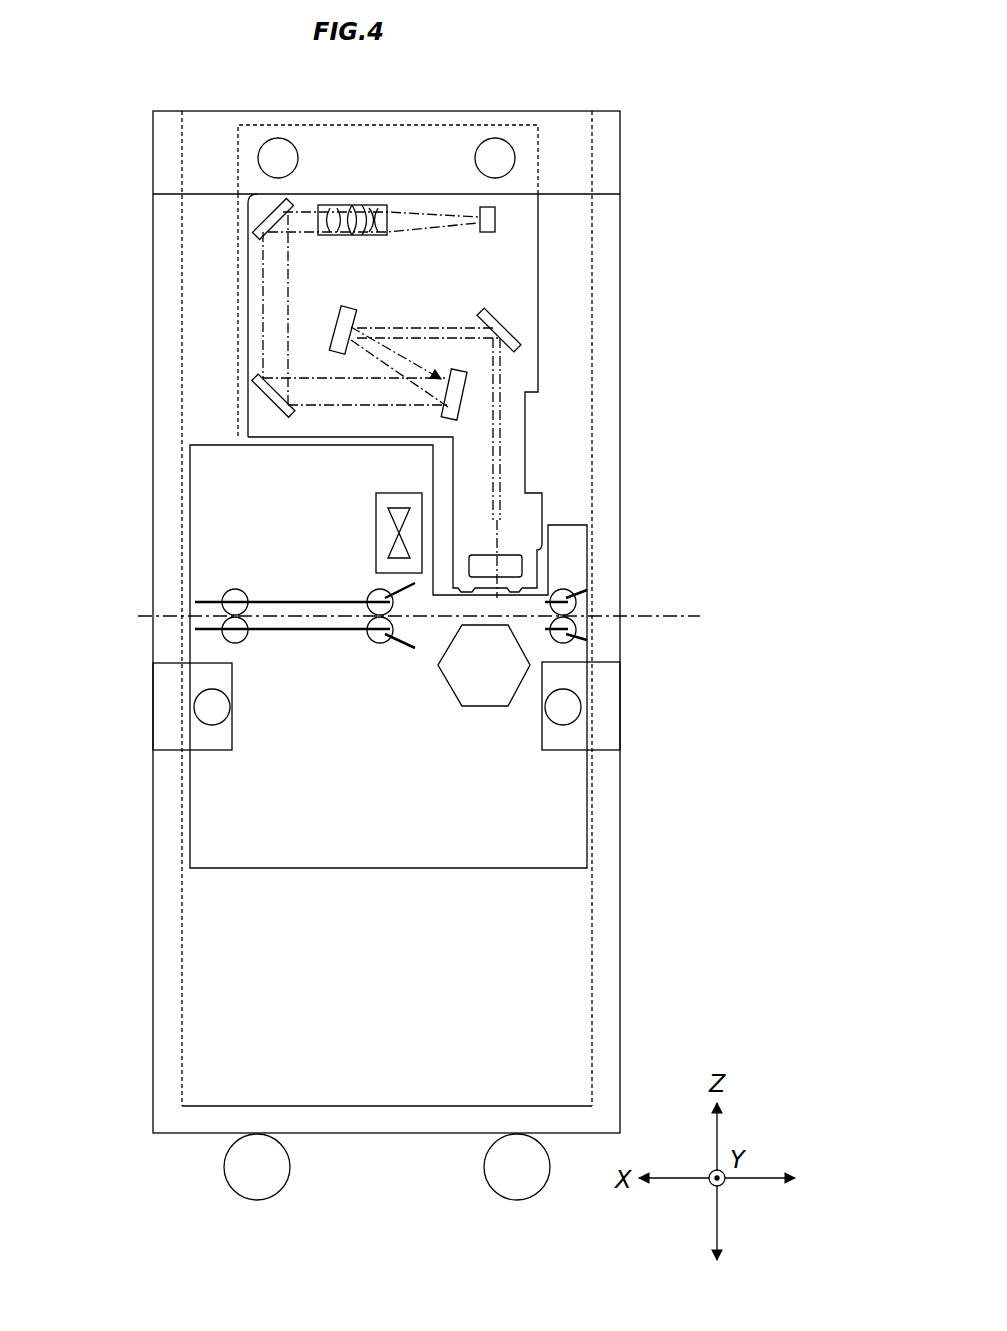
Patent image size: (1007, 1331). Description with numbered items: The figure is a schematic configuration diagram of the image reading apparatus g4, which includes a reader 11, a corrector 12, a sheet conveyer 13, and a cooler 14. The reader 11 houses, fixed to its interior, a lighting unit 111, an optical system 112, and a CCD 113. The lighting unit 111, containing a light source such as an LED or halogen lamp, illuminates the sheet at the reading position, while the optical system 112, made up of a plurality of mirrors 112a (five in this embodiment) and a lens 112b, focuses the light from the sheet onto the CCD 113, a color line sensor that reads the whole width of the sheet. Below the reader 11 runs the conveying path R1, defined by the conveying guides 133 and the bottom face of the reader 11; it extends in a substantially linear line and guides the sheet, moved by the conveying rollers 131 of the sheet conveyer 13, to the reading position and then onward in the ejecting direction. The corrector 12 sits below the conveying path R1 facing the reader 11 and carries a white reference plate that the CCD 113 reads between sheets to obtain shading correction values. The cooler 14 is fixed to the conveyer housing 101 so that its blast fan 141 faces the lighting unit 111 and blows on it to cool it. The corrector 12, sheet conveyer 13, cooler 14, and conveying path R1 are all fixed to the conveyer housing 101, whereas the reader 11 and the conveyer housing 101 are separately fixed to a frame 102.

The image reading apparatus g4 is at (584, 104).
The reader 11 is at (423, 334).
The corrector 12 is at (485, 707).
The sheet conveyer 13 is at (422, 631).
The cooler 14 is at (347, 517).
The conveyer housing 101 is at (465, 870).
The frame 102 is at (151, 840).
The lighting unit 111 is at (522, 563).
The optical system 112 is at (246, 310).
The mirrors 112a is at (277, 212).
The lens 112b is at (356, 236).
The CCD 113 is at (488, 233).
The conveying rollers 131 is at (373, 607).
The conveying guides 133 is at (320, 628).
The blast fan 141 is at (375, 528).
The conveying path R1 is at (440, 628).